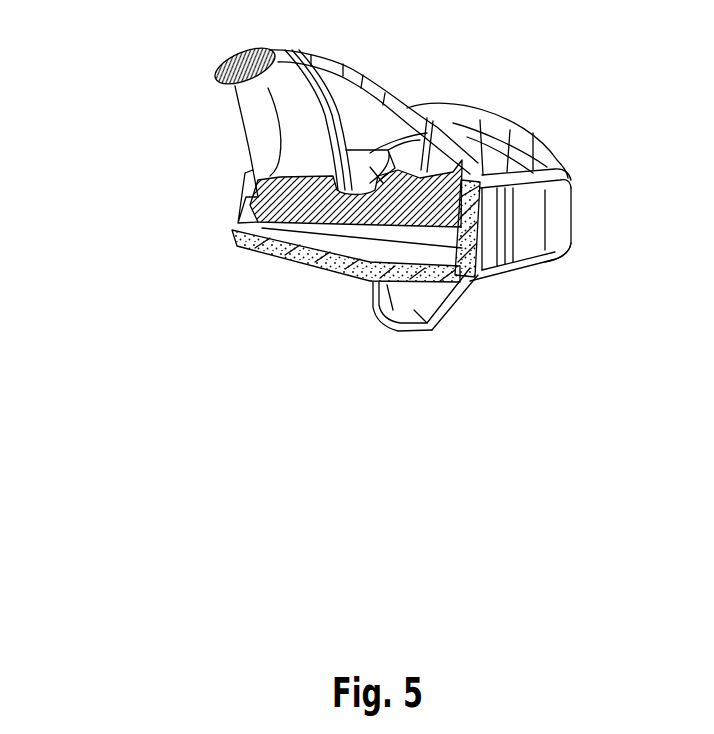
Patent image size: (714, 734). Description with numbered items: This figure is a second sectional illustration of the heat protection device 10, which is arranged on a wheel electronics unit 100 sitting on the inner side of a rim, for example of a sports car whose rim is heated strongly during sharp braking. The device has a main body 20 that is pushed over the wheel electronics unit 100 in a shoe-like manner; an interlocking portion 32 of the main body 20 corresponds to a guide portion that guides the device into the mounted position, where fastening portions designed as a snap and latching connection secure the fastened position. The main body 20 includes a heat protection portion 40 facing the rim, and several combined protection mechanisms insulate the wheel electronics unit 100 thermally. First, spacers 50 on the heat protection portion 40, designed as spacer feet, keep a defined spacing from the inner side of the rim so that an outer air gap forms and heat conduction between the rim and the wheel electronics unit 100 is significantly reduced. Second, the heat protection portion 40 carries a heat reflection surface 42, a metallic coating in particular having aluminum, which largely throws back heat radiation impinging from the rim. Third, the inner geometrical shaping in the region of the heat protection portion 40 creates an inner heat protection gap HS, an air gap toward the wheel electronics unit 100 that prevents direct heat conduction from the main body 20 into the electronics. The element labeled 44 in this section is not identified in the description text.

The heat protection device 10 is at (146, 174).
The wheel electronics unit 100 is at (440, 115).
The main body 20 is at (548, 186).
The interlocking portion 32 is at (532, 213).
The inner heat protection gap HS is at (351, 236).
The floor section 44 is at (328, 268).
The heat protection portion 40 is at (350, 282).
The heat reflection surface 42 is at (394, 287).
The spacers 50 is at (418, 312).